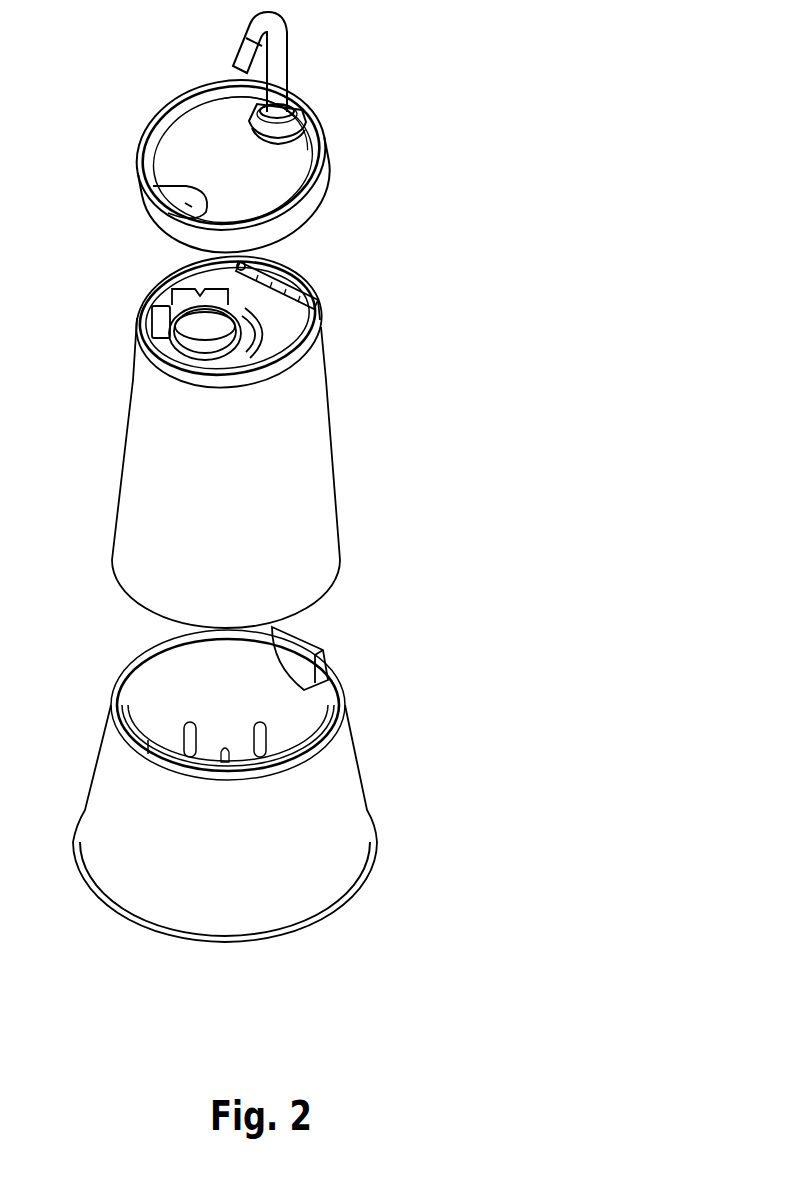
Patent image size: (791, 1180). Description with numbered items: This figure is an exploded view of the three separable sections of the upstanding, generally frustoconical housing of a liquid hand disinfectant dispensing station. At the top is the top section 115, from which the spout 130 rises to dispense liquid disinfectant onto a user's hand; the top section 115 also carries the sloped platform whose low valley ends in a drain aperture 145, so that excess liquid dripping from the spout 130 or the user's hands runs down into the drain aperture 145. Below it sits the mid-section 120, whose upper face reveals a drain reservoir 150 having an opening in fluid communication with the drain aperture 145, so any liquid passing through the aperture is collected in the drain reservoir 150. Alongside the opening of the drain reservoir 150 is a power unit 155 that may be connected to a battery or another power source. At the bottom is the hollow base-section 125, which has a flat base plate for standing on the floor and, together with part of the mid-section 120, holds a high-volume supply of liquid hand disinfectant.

The top section 115 is at (317, 190).
The spout 130 is at (288, 56).
The drain aperture 145 is at (185, 205).
The mid-section 120 is at (324, 400).
The drain reservoir 150 is at (152, 352).
The power unit 155 is at (163, 295).
The base-section 125 is at (347, 727).